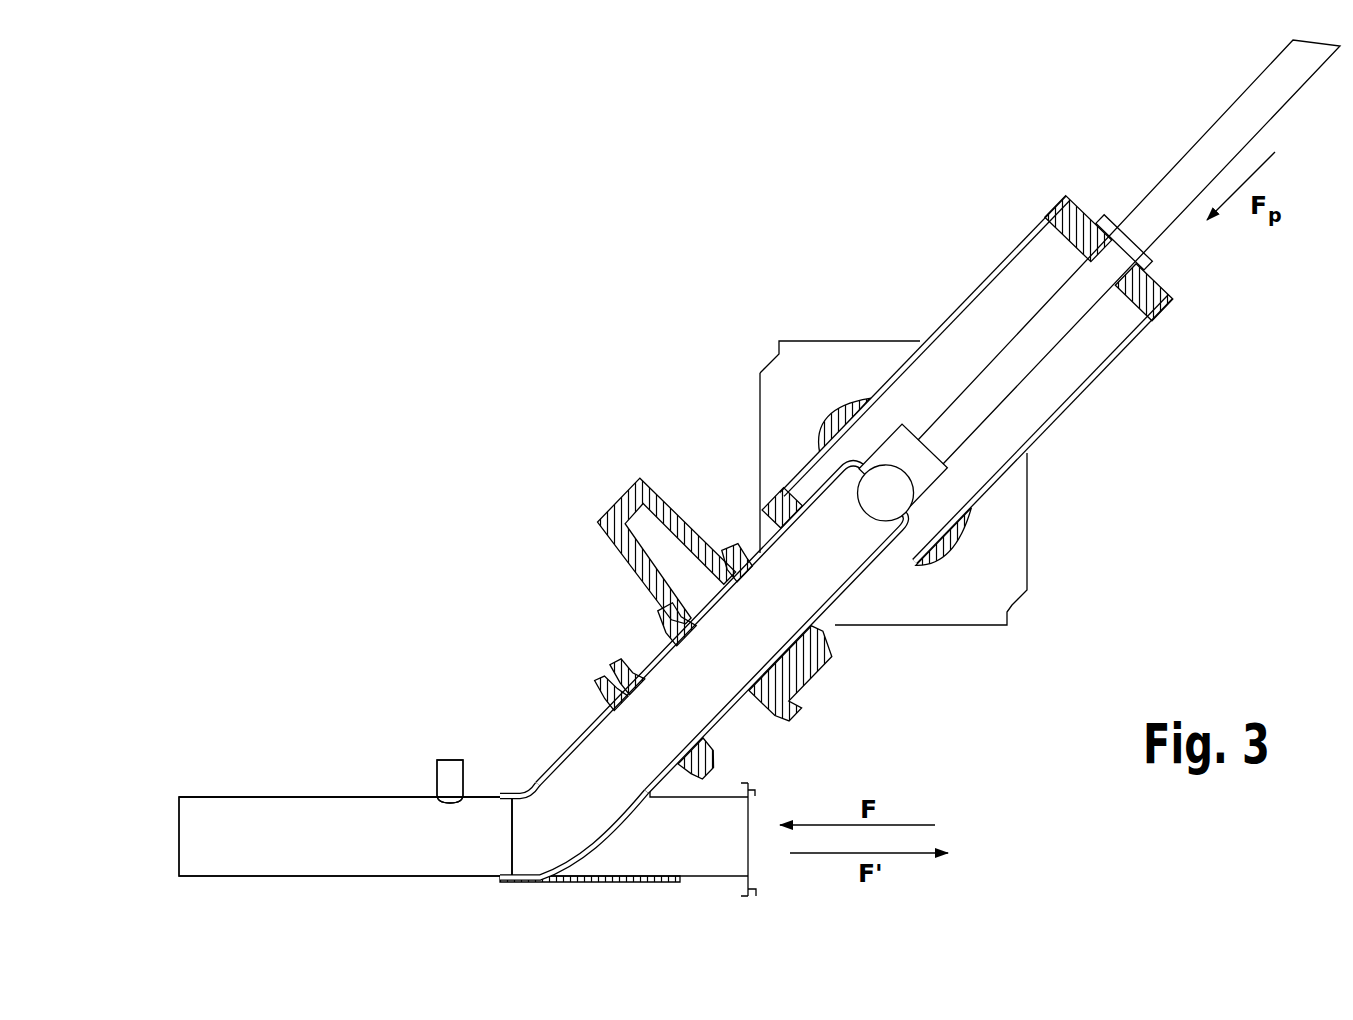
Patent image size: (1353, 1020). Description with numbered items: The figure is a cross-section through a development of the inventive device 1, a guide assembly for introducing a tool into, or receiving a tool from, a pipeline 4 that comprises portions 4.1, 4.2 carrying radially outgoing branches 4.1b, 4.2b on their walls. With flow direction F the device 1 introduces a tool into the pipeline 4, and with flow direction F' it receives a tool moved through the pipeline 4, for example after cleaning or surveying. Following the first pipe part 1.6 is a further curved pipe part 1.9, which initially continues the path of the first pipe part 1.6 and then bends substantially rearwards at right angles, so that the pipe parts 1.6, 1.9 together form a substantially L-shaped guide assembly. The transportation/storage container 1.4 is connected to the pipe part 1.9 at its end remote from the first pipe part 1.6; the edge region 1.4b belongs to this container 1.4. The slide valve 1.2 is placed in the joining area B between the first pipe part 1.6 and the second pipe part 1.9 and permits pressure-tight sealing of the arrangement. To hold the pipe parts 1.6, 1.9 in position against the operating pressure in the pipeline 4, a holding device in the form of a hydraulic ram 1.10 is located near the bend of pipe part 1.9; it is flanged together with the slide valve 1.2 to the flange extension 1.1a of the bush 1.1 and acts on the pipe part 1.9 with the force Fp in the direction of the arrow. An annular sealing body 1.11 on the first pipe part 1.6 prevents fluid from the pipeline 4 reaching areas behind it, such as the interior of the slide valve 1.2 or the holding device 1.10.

The device 1 is at (646, 280).
The bush 1.1 is at (684, 790).
The flange extension 1.1a is at (597, 720).
The slide valve 1.2 is at (630, 485).
The transportation/storage container 1.4 is at (873, 302).
The housing edge 1.4b is at (766, 362).
The first pipe part 1.6 is at (575, 738).
The further curved pipe part 1.9 is at (790, 578).
The hydraulic ram 1.10 is at (1040, 180).
The annular sealing body 1.11 is at (708, 752).
The pipeline 4 is at (348, 766).
The pipeline portion 4.1 is at (220, 795).
The pipeline portion 4.2 is at (345, 836).
The branch 4.1b is at (447, 762).
The branch 4.2b is at (450, 781).
The joining area B is at (830, 693).